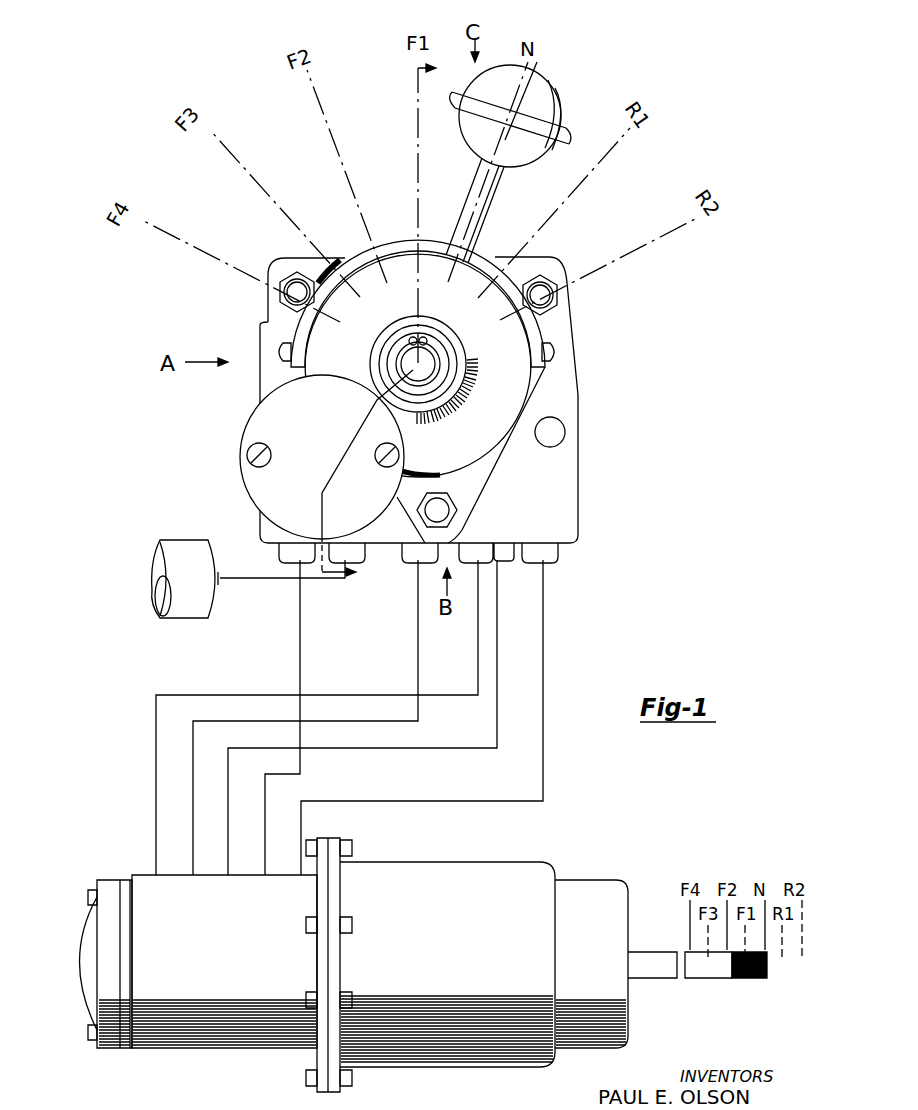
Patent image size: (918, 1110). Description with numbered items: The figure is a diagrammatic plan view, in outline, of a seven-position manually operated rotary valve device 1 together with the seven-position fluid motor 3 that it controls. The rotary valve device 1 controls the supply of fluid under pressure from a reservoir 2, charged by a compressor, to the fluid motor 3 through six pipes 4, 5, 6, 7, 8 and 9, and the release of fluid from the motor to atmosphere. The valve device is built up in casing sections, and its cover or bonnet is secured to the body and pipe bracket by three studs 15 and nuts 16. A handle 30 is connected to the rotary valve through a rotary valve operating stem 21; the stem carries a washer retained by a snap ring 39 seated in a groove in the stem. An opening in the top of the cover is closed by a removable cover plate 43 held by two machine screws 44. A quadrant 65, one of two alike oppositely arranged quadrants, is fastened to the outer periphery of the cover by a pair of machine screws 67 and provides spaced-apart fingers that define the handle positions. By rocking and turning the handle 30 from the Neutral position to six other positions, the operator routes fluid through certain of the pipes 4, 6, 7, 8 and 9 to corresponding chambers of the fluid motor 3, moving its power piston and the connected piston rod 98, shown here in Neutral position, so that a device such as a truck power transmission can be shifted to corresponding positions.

The rotary valve device 1 is at (578, 385).
The reservoir 2 is at (218, 597).
The fluid motor 3 is at (632, 1020).
The pipe 4 is at (265, 818).
The pipe 5 is at (320, 582).
The pipe 6 is at (193, 818).
The pipe 7 is at (156, 818).
The pipe 8 is at (228, 818).
The pipe 9 is at (301, 818).
The stud 15 is at (468, 515).
The nut 16 is at (480, 522).
The rotary valve operating stem 21 is at (408, 358).
The handle 30 is at (498, 197).
The snap ring 39 is at (430, 343).
The cover plate 43 is at (246, 482).
The machine screw 44 is at (386, 450).
The quadrant 65 is at (300, 331).
The machine screw 67 is at (590, 342).
The piston rod 98 is at (673, 978).